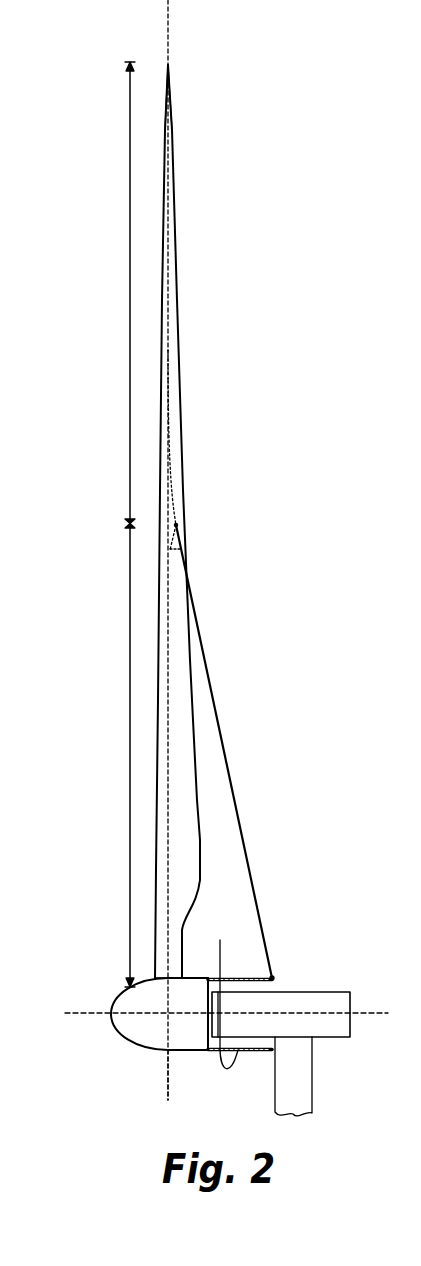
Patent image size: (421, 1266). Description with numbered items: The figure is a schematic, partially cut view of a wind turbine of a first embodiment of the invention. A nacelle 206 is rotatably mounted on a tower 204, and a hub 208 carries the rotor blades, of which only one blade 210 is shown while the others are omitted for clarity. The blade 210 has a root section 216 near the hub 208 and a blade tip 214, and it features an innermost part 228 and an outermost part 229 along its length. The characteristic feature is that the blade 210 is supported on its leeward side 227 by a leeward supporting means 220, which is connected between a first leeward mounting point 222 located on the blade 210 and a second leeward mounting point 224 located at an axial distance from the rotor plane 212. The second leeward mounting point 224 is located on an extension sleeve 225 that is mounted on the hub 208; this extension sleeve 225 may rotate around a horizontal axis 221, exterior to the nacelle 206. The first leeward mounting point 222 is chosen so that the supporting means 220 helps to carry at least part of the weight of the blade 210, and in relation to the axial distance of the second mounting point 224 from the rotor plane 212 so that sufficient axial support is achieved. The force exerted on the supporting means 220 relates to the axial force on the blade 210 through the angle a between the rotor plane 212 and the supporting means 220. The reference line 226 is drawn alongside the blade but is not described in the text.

The tower 204 is at (296, 1070).
The nacelle 206 is at (289, 1013).
The hub 208 is at (165, 1017).
The blade 210 is at (185, 857).
The rotor plane 212 is at (167, 1072).
The blade tip 214 is at (171, 67).
The root section 216 is at (162, 968).
The leeward supporting means 220 is at (223, 745).
The horizontal axis 221 is at (92, 1012).
The first leeward mounting point 222 is at (178, 527).
The second leeward mounting point 224 is at (276, 977).
The extension sleeve 225 is at (257, 975).
The reference line 226 is at (132, 497).
The leeward side 227 is at (196, 550).
The innermost part 228 is at (109, 755).
The outermost part 229 is at (107, 293).
The angle a is at (174, 551).